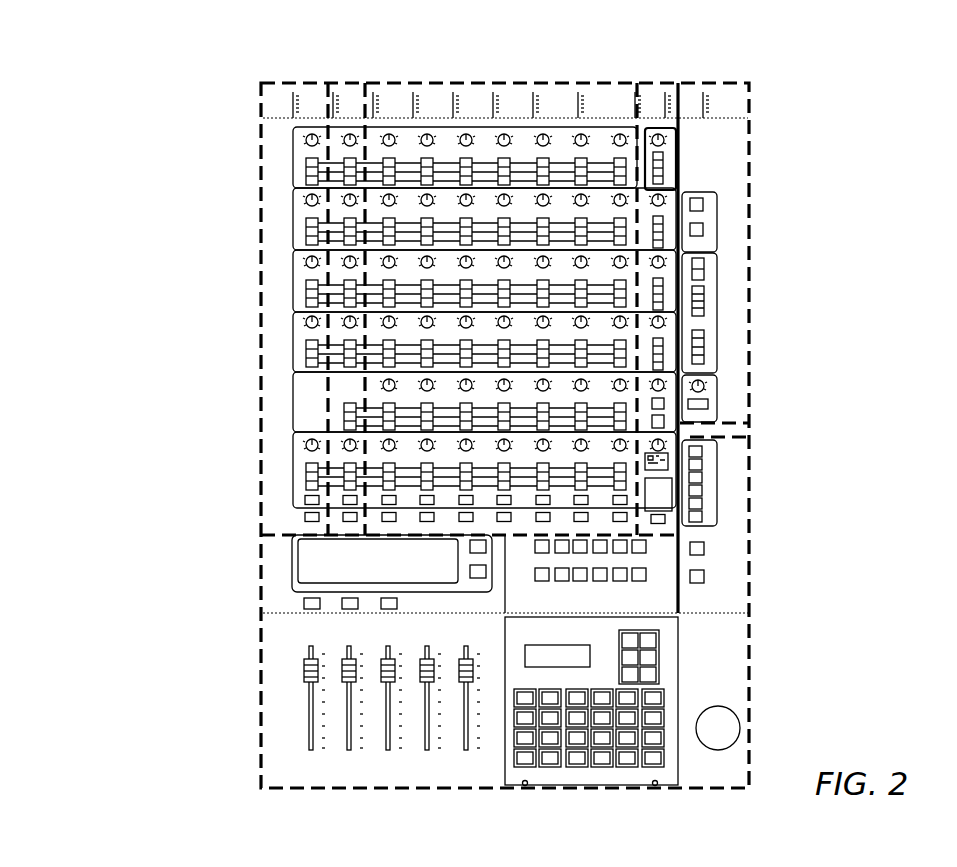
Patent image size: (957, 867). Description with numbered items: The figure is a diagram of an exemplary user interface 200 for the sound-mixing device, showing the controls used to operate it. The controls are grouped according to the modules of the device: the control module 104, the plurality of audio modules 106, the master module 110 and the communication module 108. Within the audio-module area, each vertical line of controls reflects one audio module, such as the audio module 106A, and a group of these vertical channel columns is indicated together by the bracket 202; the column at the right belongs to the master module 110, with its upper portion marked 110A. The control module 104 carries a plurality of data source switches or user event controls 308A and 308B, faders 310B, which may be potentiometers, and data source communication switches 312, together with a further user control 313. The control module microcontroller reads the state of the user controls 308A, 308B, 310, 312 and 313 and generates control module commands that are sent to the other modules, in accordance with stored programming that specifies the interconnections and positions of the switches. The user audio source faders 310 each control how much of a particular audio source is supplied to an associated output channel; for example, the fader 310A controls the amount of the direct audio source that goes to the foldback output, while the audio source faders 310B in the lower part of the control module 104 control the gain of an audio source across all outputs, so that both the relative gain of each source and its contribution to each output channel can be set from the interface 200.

The user interface 200 is at (67, 132).
The control module 104 is at (445, 790).
The audio modules 106 is at (262, 276).
The audio module 106A is at (330, 130).
The communication module 108 is at (715, 402).
The master module 110 is at (660, 82).
The channel strip top module 110A is at (680, 132).
The group of channel strips 202 is at (637, 72).
The data source switch 308A is at (304, 173).
The data source switch 308B is at (668, 168).
The user audio source fader 310 is at (668, 142).
The fader 310A is at (304, 141).
The audio source faders 310B is at (292, 664).
The data source communication switches 312 is at (714, 467).
The user control 313 is at (657, 568).